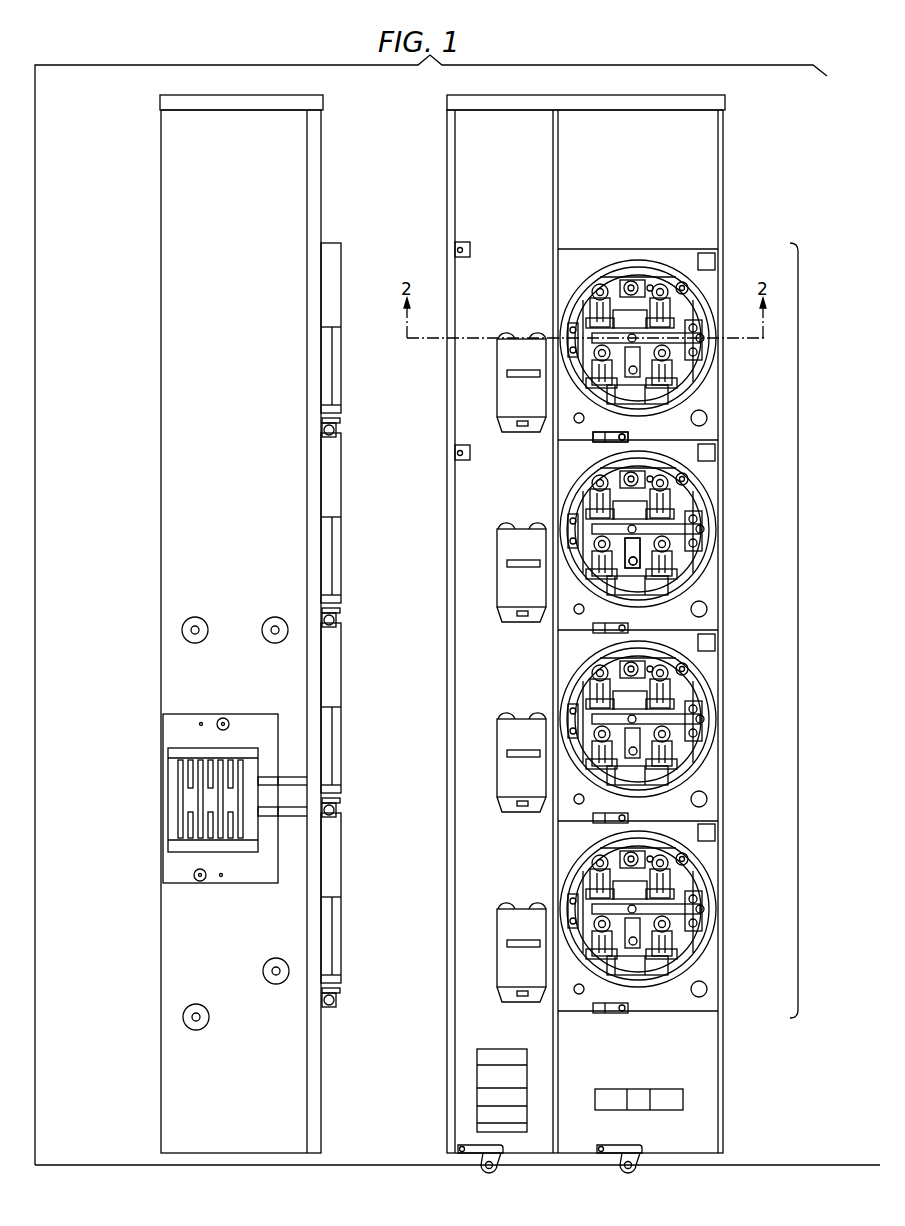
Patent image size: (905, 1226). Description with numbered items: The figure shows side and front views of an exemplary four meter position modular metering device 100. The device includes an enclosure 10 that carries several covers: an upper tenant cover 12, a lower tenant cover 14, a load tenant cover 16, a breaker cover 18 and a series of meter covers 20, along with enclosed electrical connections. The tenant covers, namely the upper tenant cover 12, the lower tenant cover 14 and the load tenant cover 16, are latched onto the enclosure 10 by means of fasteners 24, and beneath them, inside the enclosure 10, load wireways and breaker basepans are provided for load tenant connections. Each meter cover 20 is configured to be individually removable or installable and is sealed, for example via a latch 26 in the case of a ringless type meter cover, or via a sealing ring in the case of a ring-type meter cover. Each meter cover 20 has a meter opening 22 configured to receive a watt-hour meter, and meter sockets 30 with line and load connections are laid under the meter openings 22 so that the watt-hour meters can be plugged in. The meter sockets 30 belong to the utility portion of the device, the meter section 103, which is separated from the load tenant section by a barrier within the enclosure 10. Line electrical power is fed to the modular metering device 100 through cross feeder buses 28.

The four meter position modular metering device 100 is at (388, 173).
The enclosure 10 is at (728, 104).
The upper tenant cover 12 is at (648, 173).
The lower tenant cover 14 is at (652, 1060).
The load tenant cover 16 is at (513, 211).
The breaker cover 18 is at (518, 565).
The meter cover 20 is at (714, 393).
The meter opening 22 is at (712, 497).
The fastener 24 is at (463, 1154).
The latch 26 is at (630, 437).
The cross feeder bus 28 is at (215, 787).
The meter socket 30 is at (648, 553).
The meter section 103 is at (798, 631).